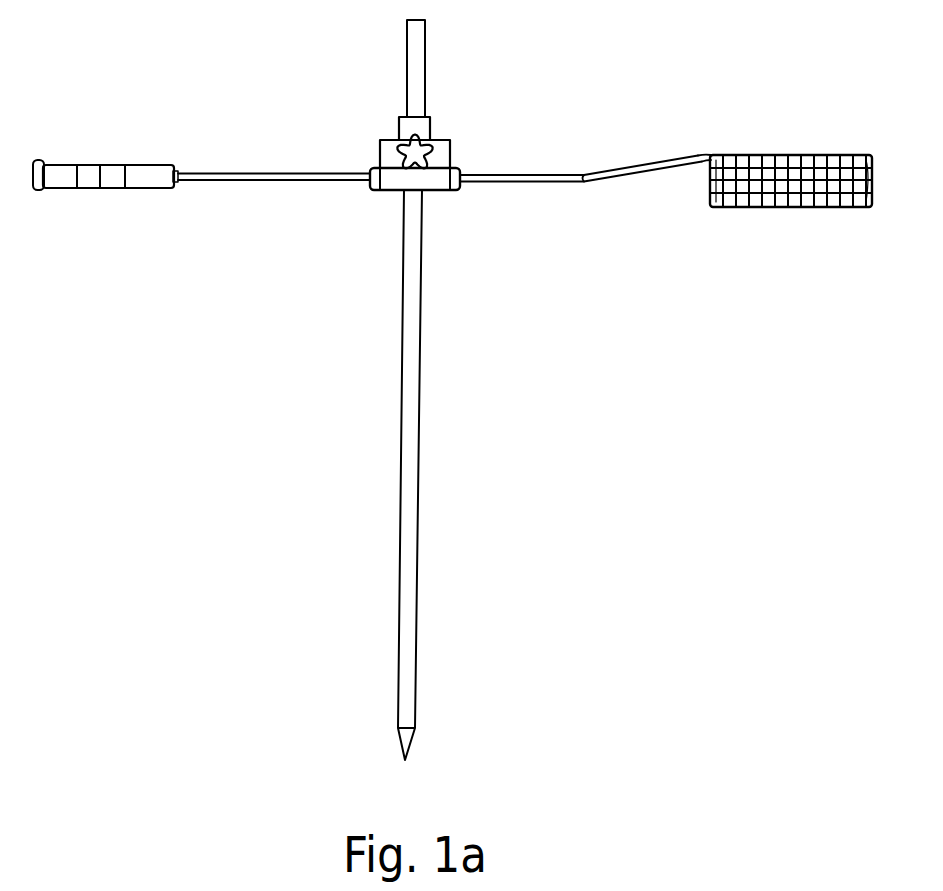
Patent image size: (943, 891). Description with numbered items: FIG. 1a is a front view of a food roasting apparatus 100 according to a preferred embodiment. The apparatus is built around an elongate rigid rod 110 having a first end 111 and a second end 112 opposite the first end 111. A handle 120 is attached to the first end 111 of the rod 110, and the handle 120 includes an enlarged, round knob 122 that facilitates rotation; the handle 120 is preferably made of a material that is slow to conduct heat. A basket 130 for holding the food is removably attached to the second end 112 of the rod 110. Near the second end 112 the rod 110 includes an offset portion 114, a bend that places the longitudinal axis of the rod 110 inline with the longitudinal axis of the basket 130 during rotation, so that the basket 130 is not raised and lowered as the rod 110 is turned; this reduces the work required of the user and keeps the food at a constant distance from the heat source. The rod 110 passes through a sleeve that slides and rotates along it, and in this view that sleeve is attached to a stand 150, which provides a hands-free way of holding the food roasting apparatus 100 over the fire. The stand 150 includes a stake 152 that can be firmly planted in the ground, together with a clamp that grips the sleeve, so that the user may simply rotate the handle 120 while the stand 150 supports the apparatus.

The food roasting apparatus 100 is at (222, 443).
The elongate rigid rod 110 is at (289, 172).
The first end 111 is at (177, 170).
The second end 112 is at (707, 154).
The offset portion 114 is at (623, 165).
The handle 120 is at (135, 164).
The round knob 122 is at (39, 191).
The basket 130 is at (799, 236).
The stand 150 is at (387, 77).
The stake 152 is at (422, 363).